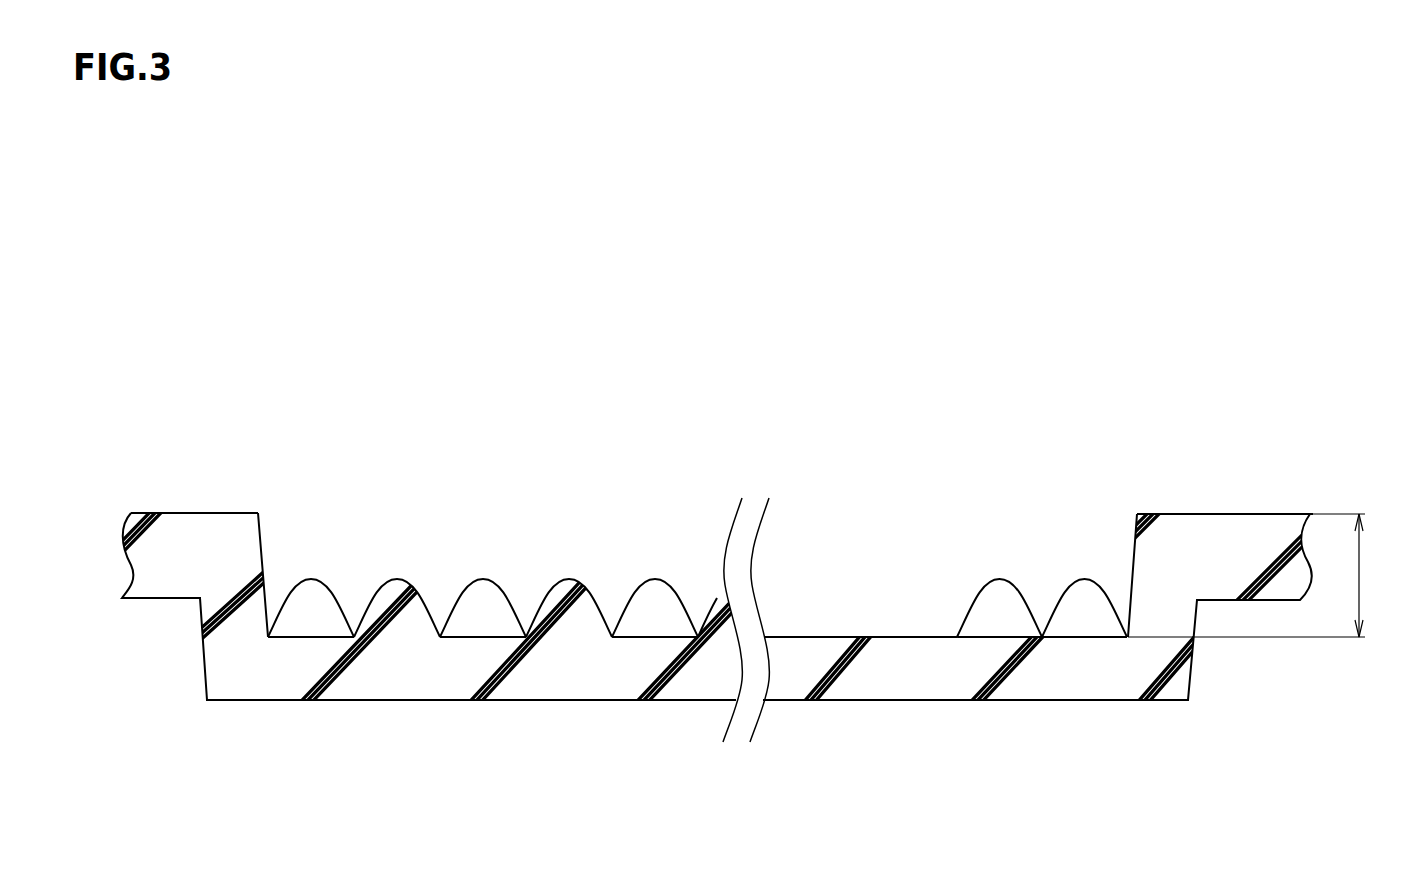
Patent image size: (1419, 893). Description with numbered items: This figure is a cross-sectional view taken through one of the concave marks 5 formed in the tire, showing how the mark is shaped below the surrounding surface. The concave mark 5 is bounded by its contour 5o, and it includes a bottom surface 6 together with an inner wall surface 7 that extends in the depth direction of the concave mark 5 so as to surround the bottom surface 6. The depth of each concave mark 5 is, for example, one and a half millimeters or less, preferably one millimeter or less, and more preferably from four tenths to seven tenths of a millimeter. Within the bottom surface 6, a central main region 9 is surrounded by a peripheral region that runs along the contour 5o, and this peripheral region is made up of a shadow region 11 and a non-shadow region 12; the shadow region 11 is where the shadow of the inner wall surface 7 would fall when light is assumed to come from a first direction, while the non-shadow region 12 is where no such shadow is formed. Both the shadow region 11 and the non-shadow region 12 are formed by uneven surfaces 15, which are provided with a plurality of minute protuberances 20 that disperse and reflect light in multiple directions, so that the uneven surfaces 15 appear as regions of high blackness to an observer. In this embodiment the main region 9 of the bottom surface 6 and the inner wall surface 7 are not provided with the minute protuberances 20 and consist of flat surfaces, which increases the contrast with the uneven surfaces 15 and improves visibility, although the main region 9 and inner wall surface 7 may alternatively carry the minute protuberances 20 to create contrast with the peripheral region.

The concave mark 5 is at (1091, 292).
The contour 5o is at (257, 514).
The inner wall surface 7 is at (263, 576).
The uneven surfaces 15 is at (398, 567).
The shadow region 11 is at (480, 566).
The minute protuberances 20 is at (568, 578).
The bottom surface 6 is at (655, 564).
The main region 9 is at (810, 637).
The non-shadow region 12 is at (1046, 566).